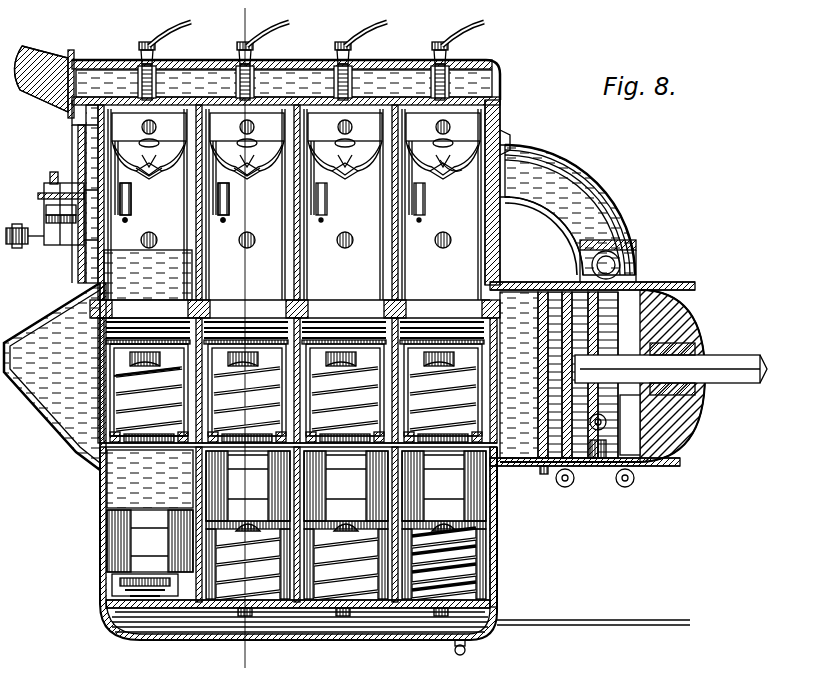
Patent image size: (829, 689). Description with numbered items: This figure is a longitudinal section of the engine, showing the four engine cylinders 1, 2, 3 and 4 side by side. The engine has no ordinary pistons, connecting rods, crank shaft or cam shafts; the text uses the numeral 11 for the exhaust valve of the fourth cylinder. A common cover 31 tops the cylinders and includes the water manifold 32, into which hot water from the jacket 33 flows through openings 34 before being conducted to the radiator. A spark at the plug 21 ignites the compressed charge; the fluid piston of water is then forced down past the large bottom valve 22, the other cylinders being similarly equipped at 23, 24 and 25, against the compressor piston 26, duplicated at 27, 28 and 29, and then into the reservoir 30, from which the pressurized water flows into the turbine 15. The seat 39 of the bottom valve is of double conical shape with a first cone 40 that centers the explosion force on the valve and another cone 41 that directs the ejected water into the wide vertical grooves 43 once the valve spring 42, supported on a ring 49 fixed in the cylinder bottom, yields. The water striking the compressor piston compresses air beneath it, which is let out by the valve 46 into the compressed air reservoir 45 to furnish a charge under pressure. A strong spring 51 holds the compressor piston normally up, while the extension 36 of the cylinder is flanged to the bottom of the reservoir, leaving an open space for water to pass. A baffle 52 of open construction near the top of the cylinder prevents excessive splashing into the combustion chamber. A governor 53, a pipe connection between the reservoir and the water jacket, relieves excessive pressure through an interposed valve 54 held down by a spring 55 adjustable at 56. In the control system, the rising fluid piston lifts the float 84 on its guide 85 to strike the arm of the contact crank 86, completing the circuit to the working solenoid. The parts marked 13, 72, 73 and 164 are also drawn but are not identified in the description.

The engine cylinder 1 is at (145, 202).
The engine cylinder 2 is at (240, 202).
The engine cylinder 3 is at (338, 202).
The engine cylinder 4 is at (436, 202).
The exhaust valve 11 is at (268, 20).
The stud 13 is at (544, 474).
The turbine 15 is at (540, 282).
The plug 21 is at (152, 52).
The large bottom valve 22 is at (120, 352).
The bottom valve 23 is at (252, 320).
The bottom valve 24 is at (348, 320).
The bottom valve 25 is at (440, 320).
The compressor piston 26 is at (115, 532).
The compressor piston 27 is at (243, 524).
The compressor piston 28 is at (341, 524).
The compressor piston 29 is at (439, 524).
The reservoir 30 is at (98, 466).
The cover 31 is at (195, 96).
The water manifold 32 is at (100, 62).
The jacket 33 is at (500, 128).
The openings 34 is at (505, 110).
The extension 36 is at (497, 534).
The seat 39 is at (110, 329).
The first cone 40 is at (108, 318).
The other cone 41 is at (110, 339).
The valve spring 42 is at (112, 390).
The wide vertical grooves 43 is at (112, 366).
The compressed air reservoir 45 is at (160, 630).
The valve 46 is at (106, 618).
The ring 49 is at (112, 428).
The spring 51 is at (110, 580).
The baffle 52 is at (95, 163).
The governor 53 is at (46, 206).
The interposed valve 54 is at (46, 218).
The spring 55 is at (44, 192).
The adjustment 56 is at (54, 176).
The exhaust pipe 72 is at (636, 262).
The exhaust elbow 73 is at (620, 208).
The float 84 is at (131, 200).
The guide 85 is at (128, 222).
The contact crank 86 is at (149, 175).
The nut 164 is at (40, 246).